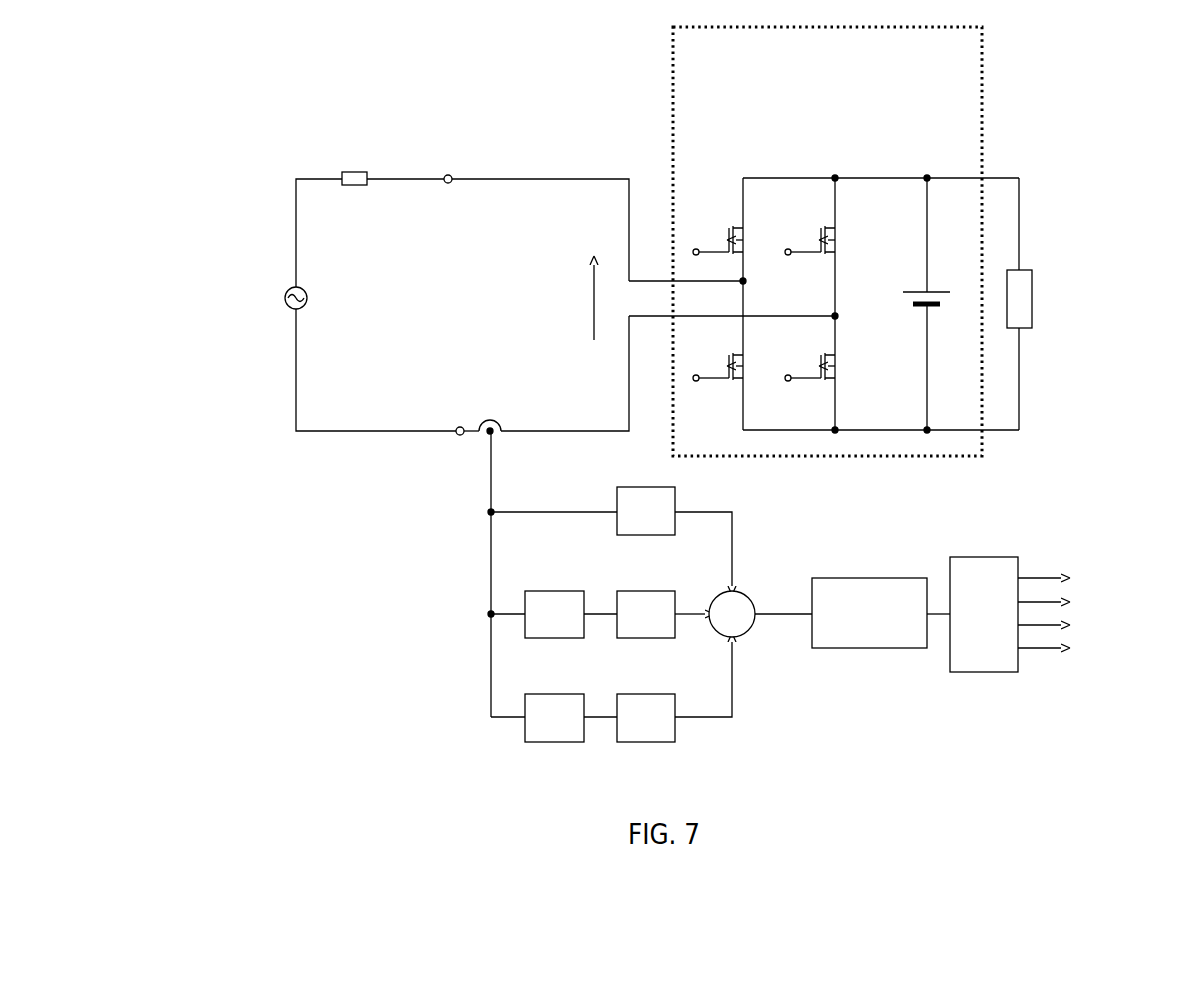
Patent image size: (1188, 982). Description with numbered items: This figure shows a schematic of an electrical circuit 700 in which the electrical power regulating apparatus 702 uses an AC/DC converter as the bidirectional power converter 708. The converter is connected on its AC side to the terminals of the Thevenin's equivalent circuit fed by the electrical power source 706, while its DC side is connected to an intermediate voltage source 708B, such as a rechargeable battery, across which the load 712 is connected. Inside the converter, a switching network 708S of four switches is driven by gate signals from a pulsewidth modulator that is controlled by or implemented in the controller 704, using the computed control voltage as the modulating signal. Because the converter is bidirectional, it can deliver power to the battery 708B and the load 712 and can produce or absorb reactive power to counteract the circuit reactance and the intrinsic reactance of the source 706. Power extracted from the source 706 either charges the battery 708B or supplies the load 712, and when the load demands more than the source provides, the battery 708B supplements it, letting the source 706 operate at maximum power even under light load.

The wireless power transfer system 700 is at (1088, 147).
The electrical power regulating apparatus 702 is at (857, 480).
The controller 704 is at (840, 712).
The electrical power source 706 is at (277, 283).
The bidirectional power converter 708 is at (846, 241).
The switching network 708S is at (779, 212).
The intermediate voltage source 708B is at (917, 280).
The load 712 is at (1037, 315).